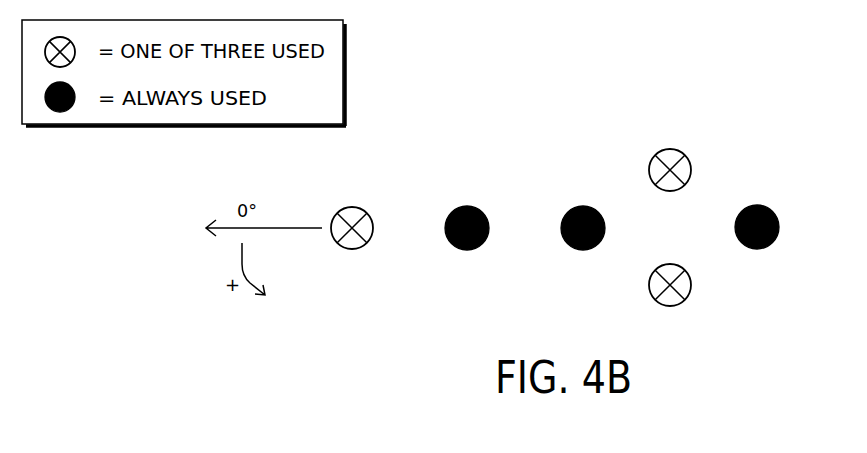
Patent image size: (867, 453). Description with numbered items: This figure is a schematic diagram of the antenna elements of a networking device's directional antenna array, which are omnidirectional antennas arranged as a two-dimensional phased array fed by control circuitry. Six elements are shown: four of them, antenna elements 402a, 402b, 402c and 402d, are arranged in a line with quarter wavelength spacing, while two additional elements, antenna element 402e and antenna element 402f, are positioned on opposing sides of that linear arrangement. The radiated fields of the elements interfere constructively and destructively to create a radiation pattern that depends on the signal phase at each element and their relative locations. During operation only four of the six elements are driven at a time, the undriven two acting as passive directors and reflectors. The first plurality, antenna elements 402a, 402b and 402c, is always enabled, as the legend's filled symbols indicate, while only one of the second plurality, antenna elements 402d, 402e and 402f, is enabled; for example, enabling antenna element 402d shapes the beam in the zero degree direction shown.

The antenna element 402a is at (758, 204).
The antenna element 402b is at (583, 205).
The antenna element 402c is at (468, 205).
The antenna element 402d is at (353, 206).
The antenna element 402e is at (670, 148).
The antenna element 402f is at (670, 308).